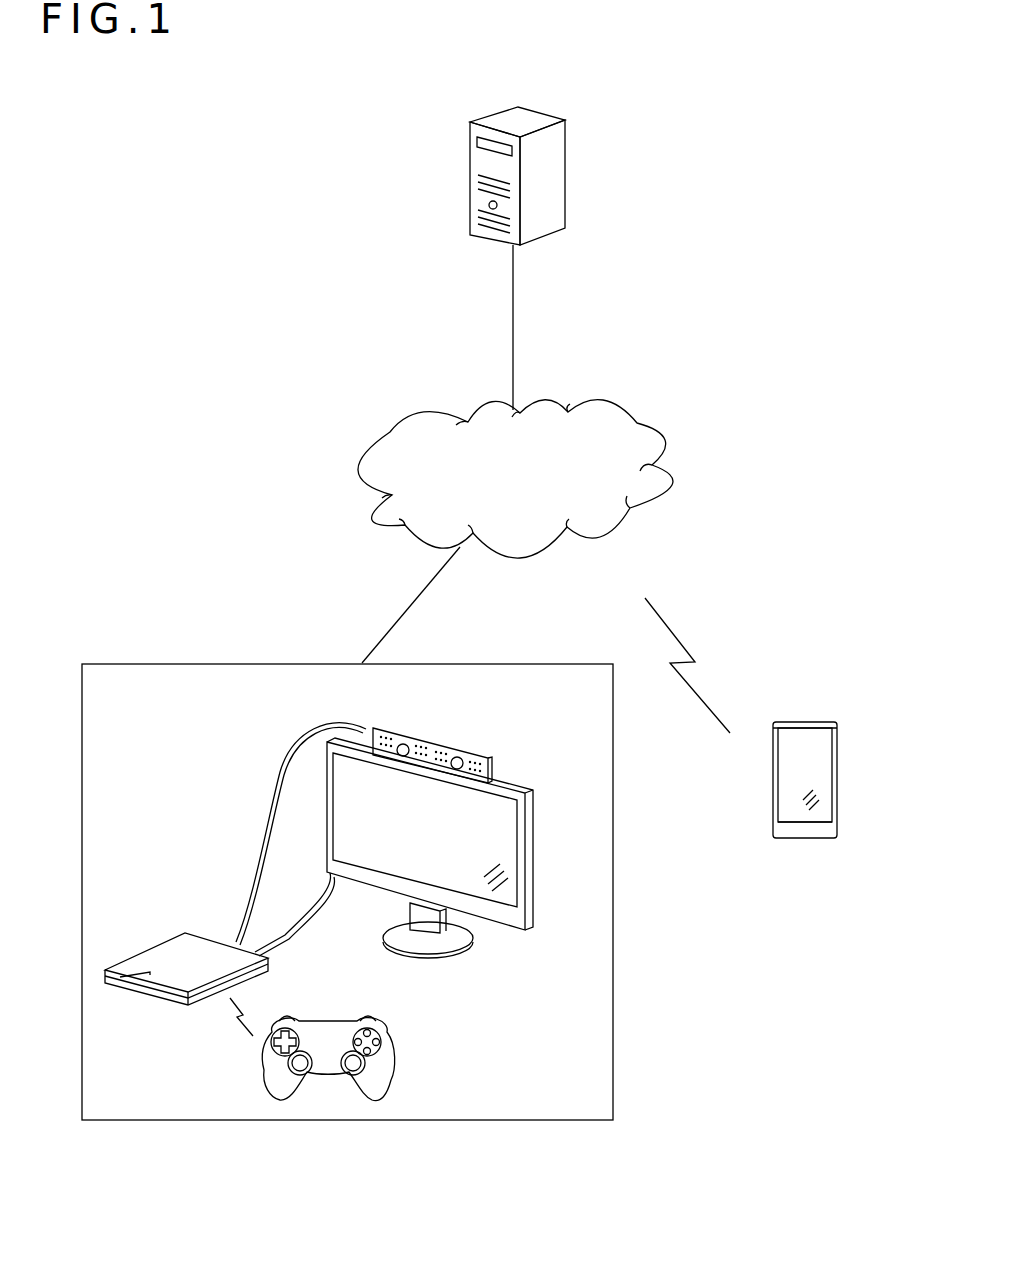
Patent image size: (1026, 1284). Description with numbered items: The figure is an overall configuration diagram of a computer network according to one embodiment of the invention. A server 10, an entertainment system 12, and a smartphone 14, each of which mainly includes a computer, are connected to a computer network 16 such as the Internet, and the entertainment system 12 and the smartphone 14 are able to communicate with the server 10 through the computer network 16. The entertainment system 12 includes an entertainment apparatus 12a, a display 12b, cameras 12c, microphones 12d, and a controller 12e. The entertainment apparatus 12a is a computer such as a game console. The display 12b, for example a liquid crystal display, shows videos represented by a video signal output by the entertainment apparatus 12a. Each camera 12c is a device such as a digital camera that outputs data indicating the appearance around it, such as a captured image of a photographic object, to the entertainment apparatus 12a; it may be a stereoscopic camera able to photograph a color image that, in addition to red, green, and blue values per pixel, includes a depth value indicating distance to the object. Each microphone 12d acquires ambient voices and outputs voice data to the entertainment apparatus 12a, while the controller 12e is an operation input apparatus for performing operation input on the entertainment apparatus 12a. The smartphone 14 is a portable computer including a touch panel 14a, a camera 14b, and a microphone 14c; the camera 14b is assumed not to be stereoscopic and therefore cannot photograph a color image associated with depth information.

The server 10 is at (528, 110).
The computer network 16 is at (673, 478).
The entertainment system 12 is at (520, 1121).
The entertainment apparatus 12a is at (150, 949).
The display 12b is at (535, 857).
The camera 12c is at (401, 757).
The microphone 12d is at (427, 742).
The controller 12e is at (398, 1063).
The smartphone 14 is at (798, 788).
The touch panel 14a is at (778, 775).
The camera 14b is at (804, 722).
The microphone 14c is at (808, 828).